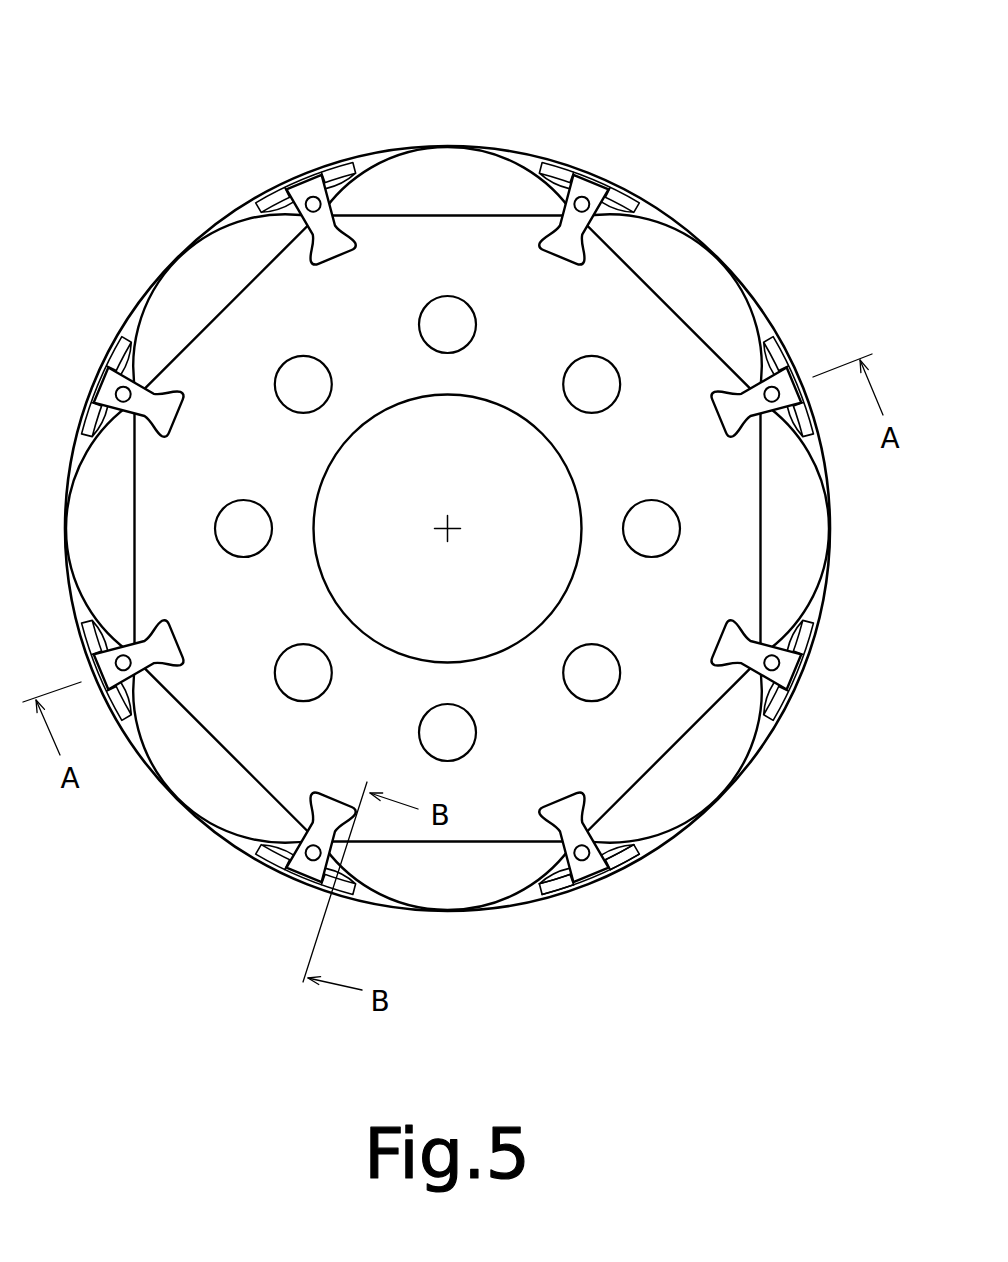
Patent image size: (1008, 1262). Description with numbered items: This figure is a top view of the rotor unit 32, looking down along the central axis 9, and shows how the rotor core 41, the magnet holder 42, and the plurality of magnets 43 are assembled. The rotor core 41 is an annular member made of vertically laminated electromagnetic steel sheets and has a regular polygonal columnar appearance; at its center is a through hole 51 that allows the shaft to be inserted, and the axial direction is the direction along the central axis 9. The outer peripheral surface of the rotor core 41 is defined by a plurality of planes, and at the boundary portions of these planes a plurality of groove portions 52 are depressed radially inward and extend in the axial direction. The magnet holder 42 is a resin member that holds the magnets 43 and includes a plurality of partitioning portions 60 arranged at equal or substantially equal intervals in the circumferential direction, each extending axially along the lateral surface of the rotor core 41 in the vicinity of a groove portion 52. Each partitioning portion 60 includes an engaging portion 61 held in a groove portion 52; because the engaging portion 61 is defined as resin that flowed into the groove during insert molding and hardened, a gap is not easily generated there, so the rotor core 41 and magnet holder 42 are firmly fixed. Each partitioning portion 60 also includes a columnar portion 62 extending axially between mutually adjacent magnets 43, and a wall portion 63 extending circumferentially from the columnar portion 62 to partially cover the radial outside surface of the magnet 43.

The rotor unit 32 is at (323, 108).
The rotor core 41 is at (447, 258).
The magnets 43 is at (800, 524).
The magnet holder 42 is at (814, 695).
The through hole 51 is at (530, 485).
The groove portions 52 is at (290, 800).
The central axis 9 is at (440, 523).
The partitioning portions 60 is at (685, 978).
The engaging portion 61 is at (652, 840).
The columnar portion 62 is at (565, 853).
The wall portion 63 is at (623, 860).